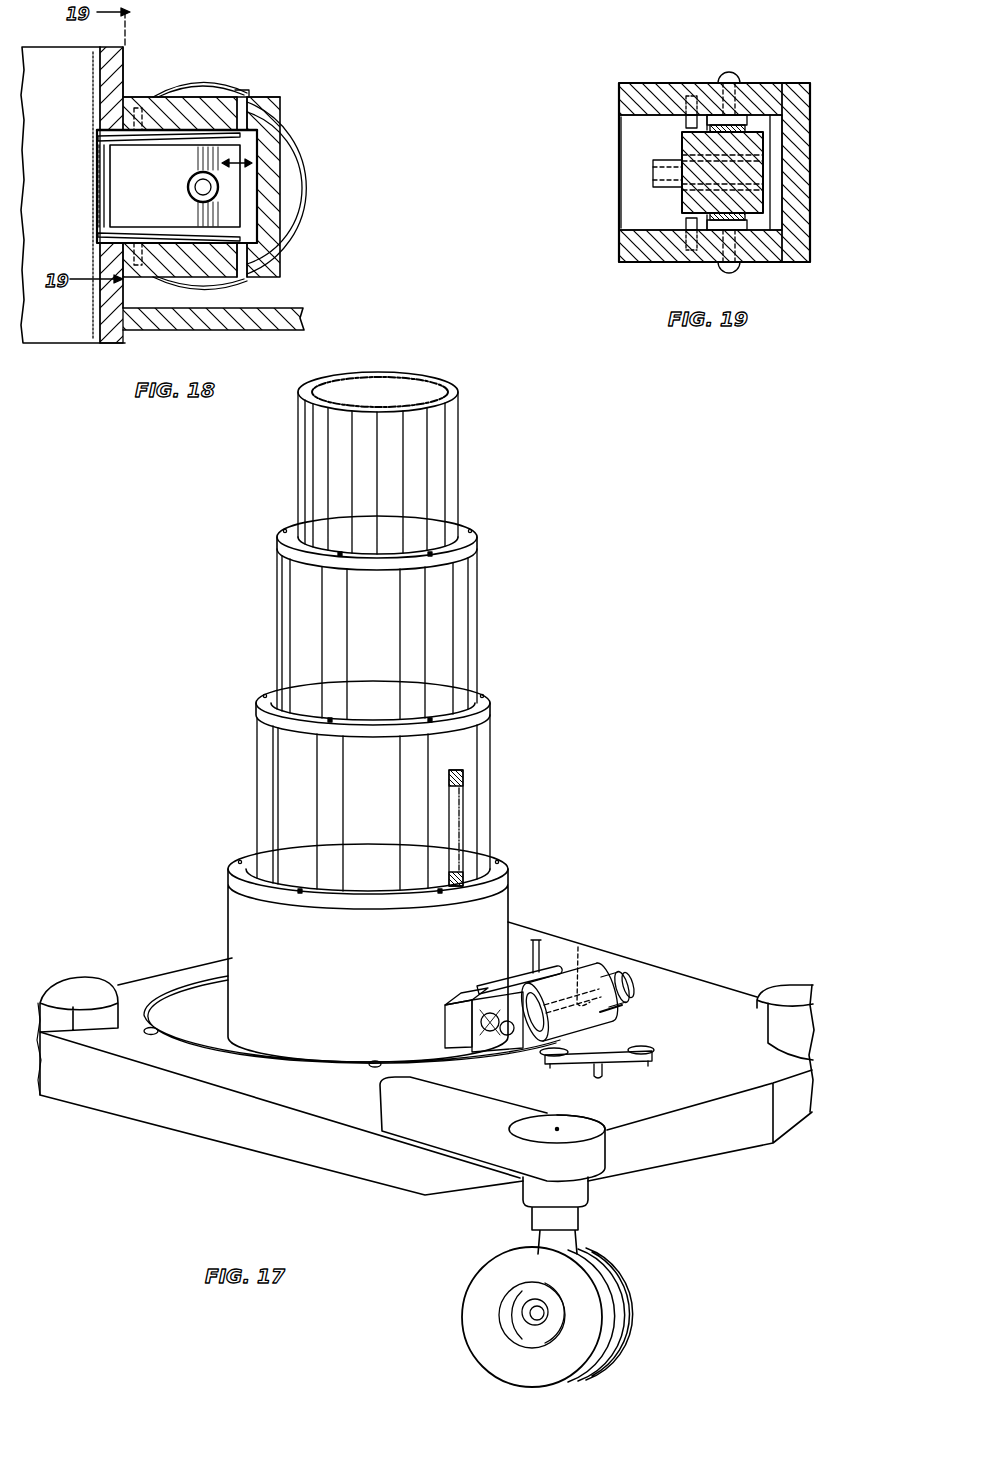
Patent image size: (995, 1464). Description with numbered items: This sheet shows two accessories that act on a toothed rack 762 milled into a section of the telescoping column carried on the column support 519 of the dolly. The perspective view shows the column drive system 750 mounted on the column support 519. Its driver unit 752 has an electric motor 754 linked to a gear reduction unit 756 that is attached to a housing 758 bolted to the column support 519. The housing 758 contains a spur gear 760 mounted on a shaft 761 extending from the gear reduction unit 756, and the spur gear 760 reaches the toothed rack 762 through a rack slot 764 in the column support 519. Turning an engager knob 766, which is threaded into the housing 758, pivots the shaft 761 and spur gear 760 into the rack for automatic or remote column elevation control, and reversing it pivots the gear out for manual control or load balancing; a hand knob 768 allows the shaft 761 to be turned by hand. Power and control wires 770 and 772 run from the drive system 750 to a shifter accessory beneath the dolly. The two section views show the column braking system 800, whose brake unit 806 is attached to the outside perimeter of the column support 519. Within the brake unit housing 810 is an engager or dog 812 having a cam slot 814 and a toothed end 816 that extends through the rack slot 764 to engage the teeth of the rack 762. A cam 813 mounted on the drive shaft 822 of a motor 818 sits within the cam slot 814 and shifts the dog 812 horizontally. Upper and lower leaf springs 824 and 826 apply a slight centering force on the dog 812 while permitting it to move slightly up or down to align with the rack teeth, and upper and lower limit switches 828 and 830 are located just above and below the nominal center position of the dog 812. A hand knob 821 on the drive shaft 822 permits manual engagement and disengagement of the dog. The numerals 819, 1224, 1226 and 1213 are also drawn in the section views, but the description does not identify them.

In FIG. 18, the toothed rack 762 is at (100, 60).
In FIG. 17, the toothed rack 762 is at (463, 782).
In FIG. 18, the rack slot 764 is at (97, 128).
In FIG. 18, the brake unit 806 is at (280, 97).
In FIG. 19, the brake unit 806 is at (714, 172).
In FIG. 18, the brake unit housing 810 is at (275, 118).
In FIG. 18, the column braking system 800 is at (318, 82).
In FIG. 18, the engager or dog 812 is at (100, 150).
In FIG. 19, the engager or dog 812 is at (768, 153).
In FIG. 18, the toothed end 816 is at (95, 189).
In FIG. 18, the motor 818 is at (250, 150).
In FIG. 18, the drive shaft 822 is at (254, 162).
In FIG. 19, the drive shaft 822 is at (630, 174).
In FIG. 18, the cam slot 814 is at (218, 187).
In FIG. 19, the cam slot 814 is at (682, 198).
In FIG. 18, the hand knob 821 is at (300, 230).
In FIG. 18, the upper limit switch 828 is at (140, 106).
In FIG. 19, the upper limit switch 828 is at (670, 112).
In FIG. 18, the lower limit switch 830 is at (165, 278).
In FIG. 19, the lower limit switch 830 is at (694, 248).
In FIG. 18, the base plate 819 is at (125, 333).
In FIG. 18, the upper spring plate 1224 is at (187, 141).
In FIG. 18, the lower spring plate 1226 is at (178, 205).
In FIG. 18, the bearing 1213 is at (188, 187).
In FIG. 19, the upper leaf spring 824 is at (757, 115).
In FIG. 19, the lower leaf spring 826 is at (740, 252).
In FIG. 19, the cam 813 is at (655, 158).
In FIG. 17, the column support 519 is at (233, 915).
In FIG. 17, the column drive system 750 is at (602, 963).
In FIG. 17, the driver unit 752 is at (610, 1028).
In FIG. 17, the electric motor 754 is at (614, 1012).
In FIG. 17, the gear reduction unit 756 is at (537, 1036).
In FIG. 17, the housing 758 is at (457, 992).
In FIG. 17, the spur gear 760 is at (445, 1020).
In FIG. 17, the shaft 761 is at (571, 975).
In FIG. 17, the engager knob 766 is at (484, 1040).
In FIG. 17, the hand knob 768 is at (630, 986).
In FIG. 17, the power and control wire 770 is at (533, 941).
In FIG. 17, the power and control wire 772 is at (545, 966).